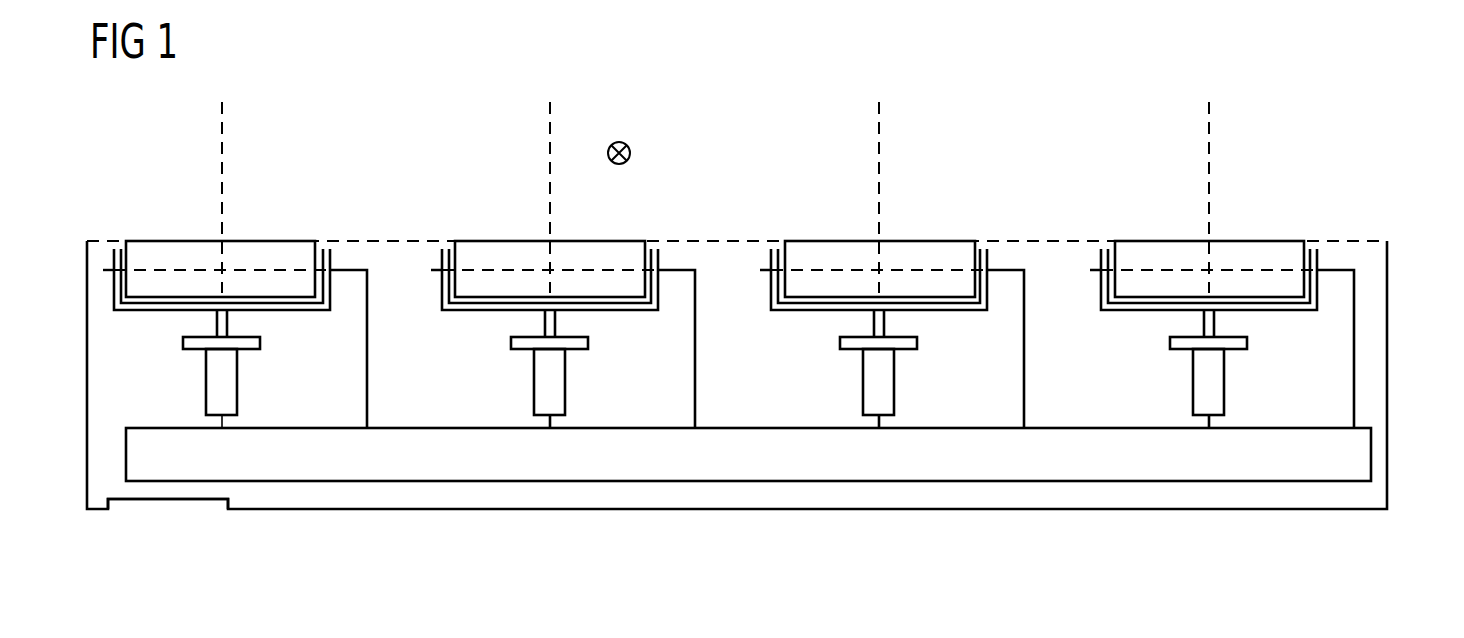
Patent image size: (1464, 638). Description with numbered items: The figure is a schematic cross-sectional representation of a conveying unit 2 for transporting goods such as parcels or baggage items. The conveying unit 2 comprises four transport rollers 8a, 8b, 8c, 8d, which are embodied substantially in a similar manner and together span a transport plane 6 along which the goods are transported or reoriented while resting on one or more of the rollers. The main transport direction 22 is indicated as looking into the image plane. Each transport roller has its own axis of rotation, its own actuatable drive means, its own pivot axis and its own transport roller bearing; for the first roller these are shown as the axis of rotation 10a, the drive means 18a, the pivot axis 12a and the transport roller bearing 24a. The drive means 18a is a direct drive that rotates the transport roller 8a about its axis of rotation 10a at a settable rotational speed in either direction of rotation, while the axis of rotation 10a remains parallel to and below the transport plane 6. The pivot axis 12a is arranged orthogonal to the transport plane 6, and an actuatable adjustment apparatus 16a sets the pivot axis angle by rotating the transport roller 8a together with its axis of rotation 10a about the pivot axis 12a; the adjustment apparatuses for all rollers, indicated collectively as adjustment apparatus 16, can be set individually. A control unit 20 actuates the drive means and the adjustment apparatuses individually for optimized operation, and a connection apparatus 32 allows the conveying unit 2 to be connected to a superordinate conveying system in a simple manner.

The conveying unit 2 is at (1357, 161).
The transport plane 6 is at (720, 239).
The transport roller 8a is at (269, 240).
The transport roller 8b is at (507, 239).
The transport roller 8c is at (934, 239).
The transport roller 8d is at (1264, 239).
The axis of rotation 10a is at (104, 268).
The pivot axis 12a is at (222, 120).
The adjustment apparatus 16 is at (1405, 308).
The adjustment apparatus 16a is at (206, 360).
The drive means 18a is at (160, 253).
The control unit 20 is at (427, 428).
The main transport direction 22 is at (617, 141).
The transport roller bearing 24a is at (330, 257).
The connection apparatus 32 is at (169, 500).